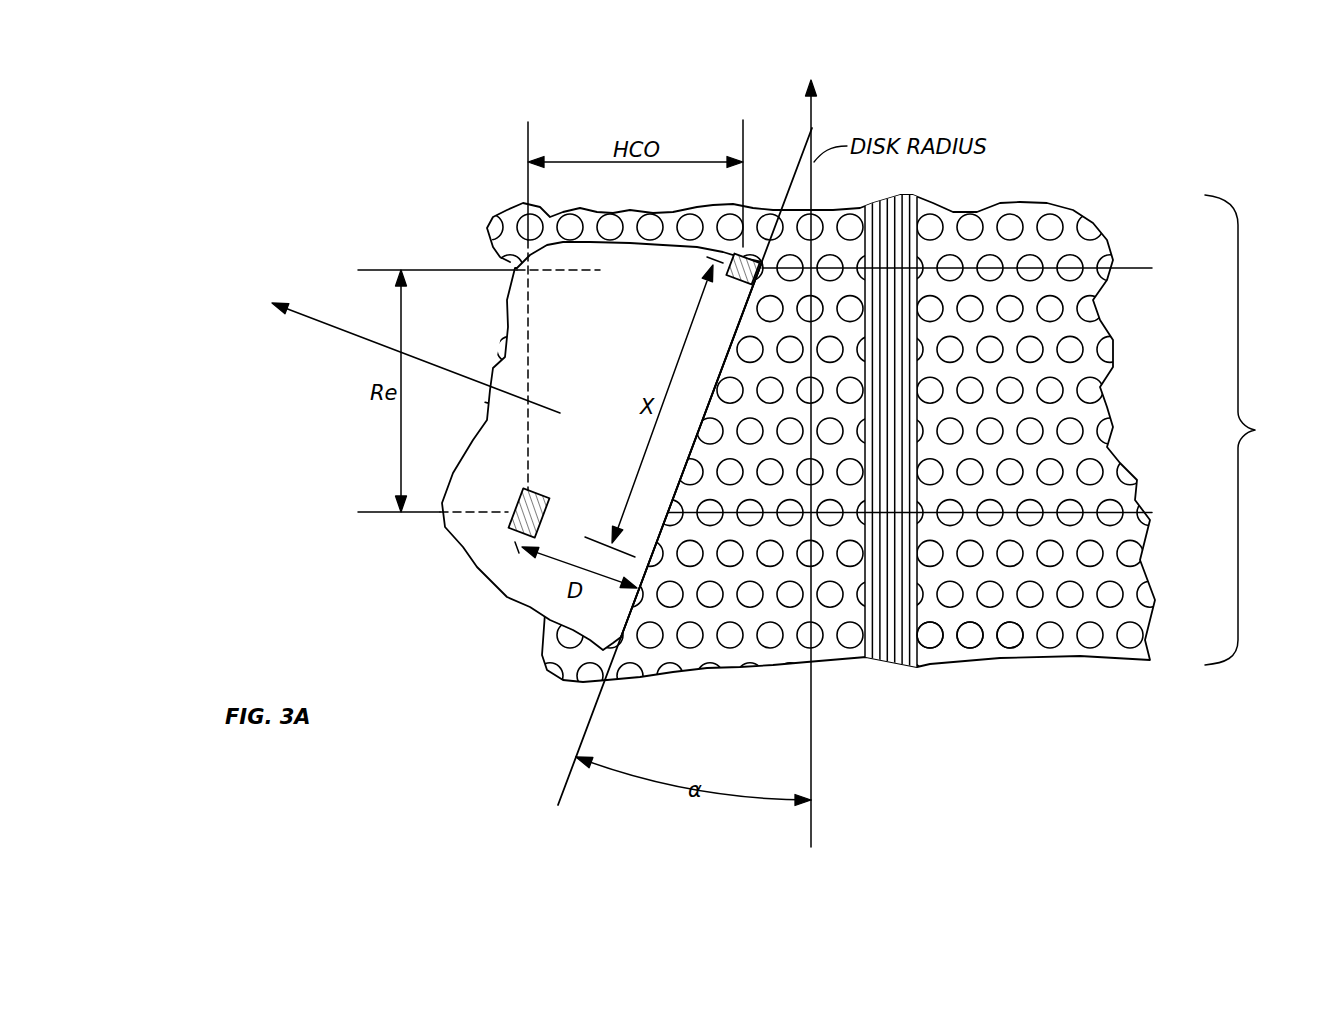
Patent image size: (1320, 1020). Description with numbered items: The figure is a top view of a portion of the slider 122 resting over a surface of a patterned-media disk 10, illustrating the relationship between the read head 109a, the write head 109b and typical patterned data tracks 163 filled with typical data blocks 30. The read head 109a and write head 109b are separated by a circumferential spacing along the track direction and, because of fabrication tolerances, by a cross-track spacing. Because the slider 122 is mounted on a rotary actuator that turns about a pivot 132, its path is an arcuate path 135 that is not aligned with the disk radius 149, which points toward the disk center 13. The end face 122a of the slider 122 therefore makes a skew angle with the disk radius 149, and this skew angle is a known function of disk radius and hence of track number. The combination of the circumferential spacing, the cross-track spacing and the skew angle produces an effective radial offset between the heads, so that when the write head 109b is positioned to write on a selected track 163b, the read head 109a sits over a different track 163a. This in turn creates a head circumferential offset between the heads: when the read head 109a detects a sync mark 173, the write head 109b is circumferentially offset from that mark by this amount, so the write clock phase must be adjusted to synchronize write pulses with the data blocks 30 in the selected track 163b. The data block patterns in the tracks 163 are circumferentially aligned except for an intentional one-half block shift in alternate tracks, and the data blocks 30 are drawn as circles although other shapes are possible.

The patterned-media disk 10 is at (1043, 213).
The disk center 13 is at (811, 69).
The data blocks 30 is at (930, 642).
The read head 109a is at (743, 284).
The write head 109b is at (534, 490).
The slider 122 is at (485, 541).
The end face 122a is at (643, 580).
The pivot 132 is at (340, 337).
The arcuate path 135 is at (572, 768).
The disk radius 149 is at (814, 820).
The patterned data tracks 163 is at (1255, 430).
The track 163a is at (1141, 269).
The selected track 163b is at (1141, 513).
The sync mark 173 is at (893, 657).